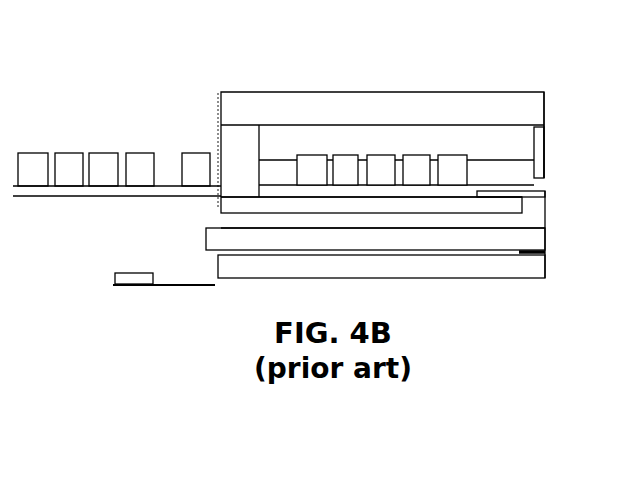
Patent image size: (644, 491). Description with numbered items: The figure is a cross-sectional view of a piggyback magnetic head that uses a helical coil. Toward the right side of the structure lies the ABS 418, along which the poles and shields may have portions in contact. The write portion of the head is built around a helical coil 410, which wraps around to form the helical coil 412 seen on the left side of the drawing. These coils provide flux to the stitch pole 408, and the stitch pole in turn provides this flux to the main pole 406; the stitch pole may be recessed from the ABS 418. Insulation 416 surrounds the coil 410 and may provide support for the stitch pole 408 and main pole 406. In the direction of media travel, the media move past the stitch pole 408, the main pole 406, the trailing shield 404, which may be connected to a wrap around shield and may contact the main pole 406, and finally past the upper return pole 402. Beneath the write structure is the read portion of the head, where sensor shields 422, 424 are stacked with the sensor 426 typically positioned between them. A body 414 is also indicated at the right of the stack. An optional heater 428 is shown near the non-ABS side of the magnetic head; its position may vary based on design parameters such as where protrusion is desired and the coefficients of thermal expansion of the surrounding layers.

The upper return pole 402 is at (455, 92).
The trailing shield 404 is at (547, 166).
The main pole 406 is at (547, 191).
The stitch pole 408 is at (228, 205).
The helical coil 410 is at (348, 155).
The helical coil 412 is at (22, 152).
The stack body 414 is at (545, 213).
The insulation 416 is at (512, 160).
The ABS 418 is at (578, 104).
The sensor shield 422 is at (206, 240).
The sensor shield 424 is at (218, 260).
The sensor 426 is at (540, 243).
The heater 428 is at (137, 272).